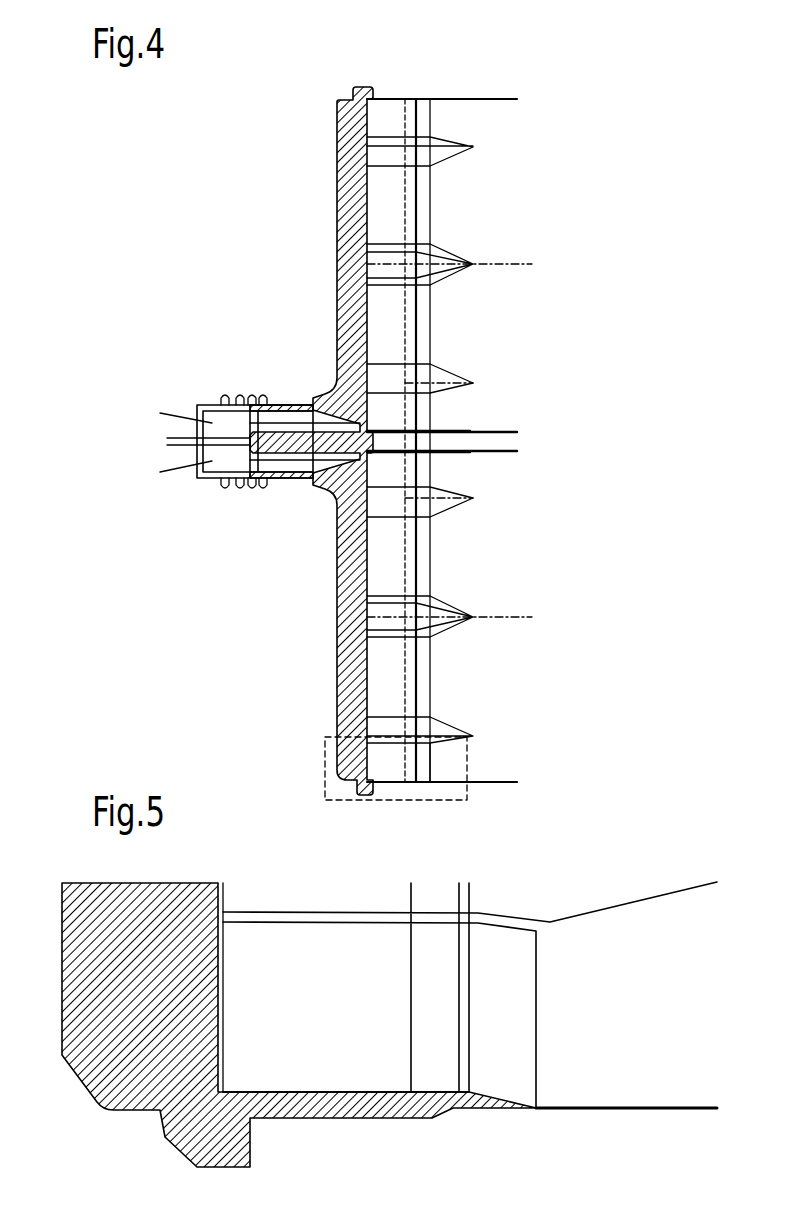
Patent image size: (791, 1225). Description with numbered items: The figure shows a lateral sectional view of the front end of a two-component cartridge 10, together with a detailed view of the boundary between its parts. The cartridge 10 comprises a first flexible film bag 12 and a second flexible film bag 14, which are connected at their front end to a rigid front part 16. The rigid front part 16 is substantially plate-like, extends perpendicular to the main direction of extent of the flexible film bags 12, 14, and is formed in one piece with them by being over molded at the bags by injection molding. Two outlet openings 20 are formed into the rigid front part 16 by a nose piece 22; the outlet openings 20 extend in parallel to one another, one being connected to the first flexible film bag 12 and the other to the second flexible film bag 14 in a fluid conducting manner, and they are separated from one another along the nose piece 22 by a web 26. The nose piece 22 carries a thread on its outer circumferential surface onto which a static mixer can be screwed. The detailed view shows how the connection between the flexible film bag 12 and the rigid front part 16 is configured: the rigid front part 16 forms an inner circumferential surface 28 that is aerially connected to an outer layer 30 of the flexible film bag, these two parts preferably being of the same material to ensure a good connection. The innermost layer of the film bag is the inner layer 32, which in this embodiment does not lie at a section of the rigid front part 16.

In FIG. 4, the cartridge 10 is at (658, 72).
In FIG. 4, the first flexible film bag 12 is at (497, 98).
In FIG. 4, the second flexible film bag 14 is at (513, 452).
In FIG. 4, the rigid front part 16 is at (345, 128).
In FIG. 4, the outlet opening 20 is at (212, 423).
In FIG. 4, the nose piece 22 is at (288, 476).
In FIG. 4, the web 26 is at (282, 425).
In FIG. 5, the inner circumferential surface 28 is at (288, 1091).
In FIG. 4, the outer layer 30 is at (477, 429).
In FIG. 5, the outer layer 30 is at (558, 1112).
In FIG. 4, the inner layer 32 is at (481, 455).
In FIG. 5, the inner layer 32 is at (353, 1088).